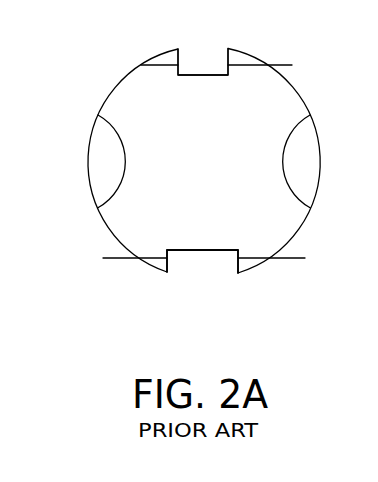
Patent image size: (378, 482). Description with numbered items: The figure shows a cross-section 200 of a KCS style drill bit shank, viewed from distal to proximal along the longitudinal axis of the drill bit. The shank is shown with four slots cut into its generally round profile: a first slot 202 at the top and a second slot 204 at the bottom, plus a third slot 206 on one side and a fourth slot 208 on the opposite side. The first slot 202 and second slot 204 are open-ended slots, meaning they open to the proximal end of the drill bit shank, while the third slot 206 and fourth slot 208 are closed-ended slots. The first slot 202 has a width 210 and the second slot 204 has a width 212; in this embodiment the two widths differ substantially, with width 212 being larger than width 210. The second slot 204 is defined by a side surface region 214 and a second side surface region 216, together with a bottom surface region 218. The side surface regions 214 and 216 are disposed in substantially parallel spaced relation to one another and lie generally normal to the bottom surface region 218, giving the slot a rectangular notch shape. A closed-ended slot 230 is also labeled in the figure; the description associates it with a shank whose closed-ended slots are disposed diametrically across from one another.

The cross-section 200 is at (108, 62).
The first slot 202 is at (210, 50).
The second slot 204 is at (208, 288).
The third slot 206 is at (73, 158).
The fourth slot 208 is at (333, 195).
The width 210 is at (281, 64).
The width 212 is at (103, 258).
The side surface region 214 is at (170, 267).
The side surface region 216 is at (240, 268).
The bottom surface region 218 is at (196, 251).
The first closed-ended slot 230 is at (377, 130).